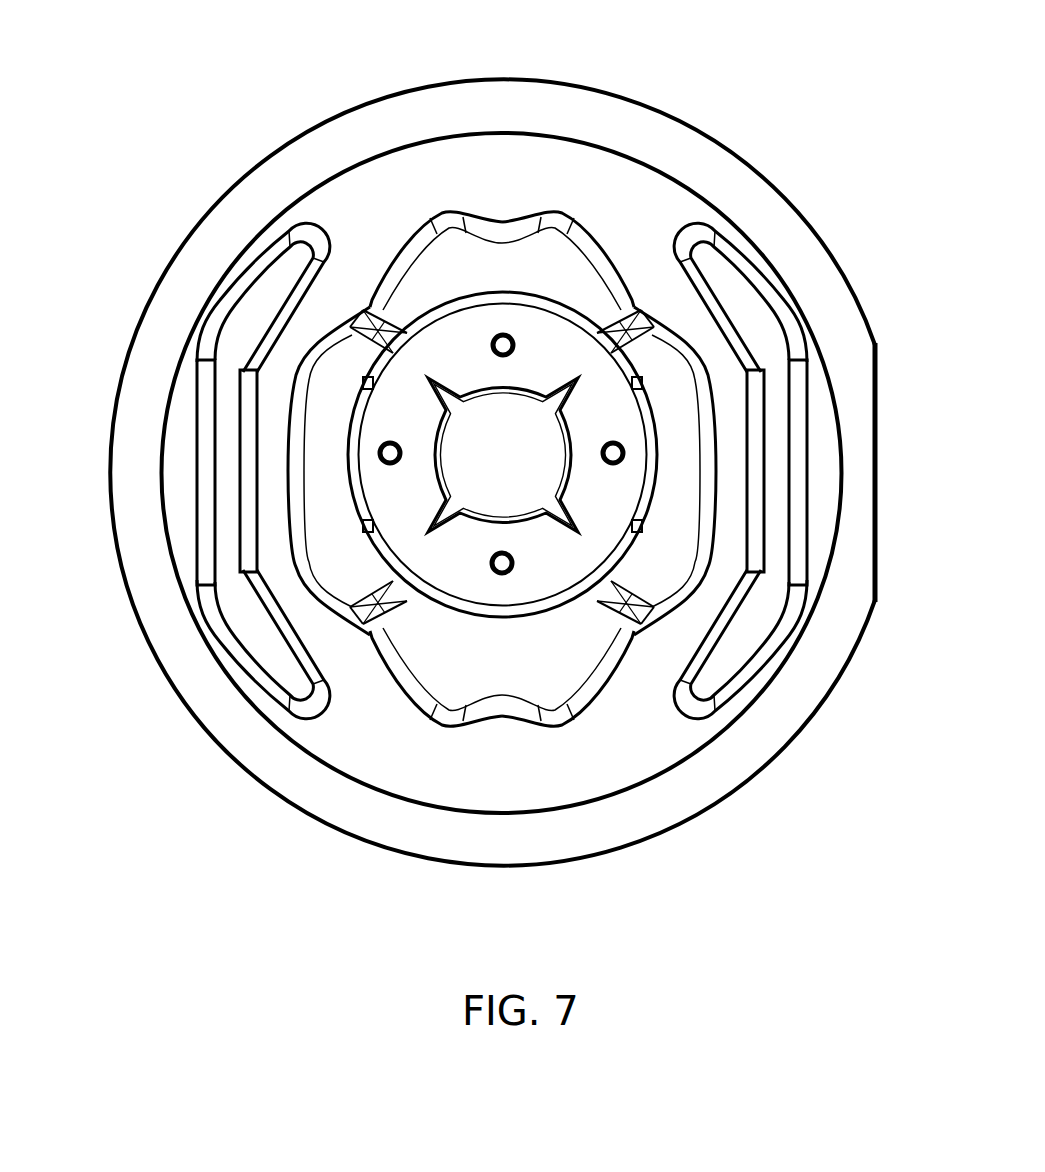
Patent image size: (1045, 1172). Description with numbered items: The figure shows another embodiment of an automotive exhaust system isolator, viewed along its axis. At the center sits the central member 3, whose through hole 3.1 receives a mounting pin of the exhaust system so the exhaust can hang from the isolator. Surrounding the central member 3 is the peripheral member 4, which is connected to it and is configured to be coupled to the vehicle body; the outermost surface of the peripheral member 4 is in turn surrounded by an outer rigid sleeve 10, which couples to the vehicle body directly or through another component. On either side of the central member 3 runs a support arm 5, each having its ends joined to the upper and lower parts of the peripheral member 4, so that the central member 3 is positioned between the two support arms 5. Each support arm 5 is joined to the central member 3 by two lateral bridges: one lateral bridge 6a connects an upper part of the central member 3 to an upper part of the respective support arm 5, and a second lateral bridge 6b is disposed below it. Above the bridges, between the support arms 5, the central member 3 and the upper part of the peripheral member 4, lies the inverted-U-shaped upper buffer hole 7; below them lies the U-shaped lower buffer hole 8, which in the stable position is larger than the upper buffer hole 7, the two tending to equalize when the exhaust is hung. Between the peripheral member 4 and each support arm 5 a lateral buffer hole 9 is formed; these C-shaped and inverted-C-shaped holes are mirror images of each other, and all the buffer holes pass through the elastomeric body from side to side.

The central member 3 is at (552, 345).
The through hole 3.1 is at (520, 474).
The peripheral member 4 is at (796, 313).
The support arm 5 is at (273, 520).
The lateral bridge 6a is at (377, 320).
The lateral bridge 6b is at (362, 612).
The upper buffer hole 7 is at (456, 283).
The lower buffer hole 8 is at (498, 678).
The lateral buffer hole 9 is at (228, 470).
The outer rigid sleeve 10 is at (834, 640).